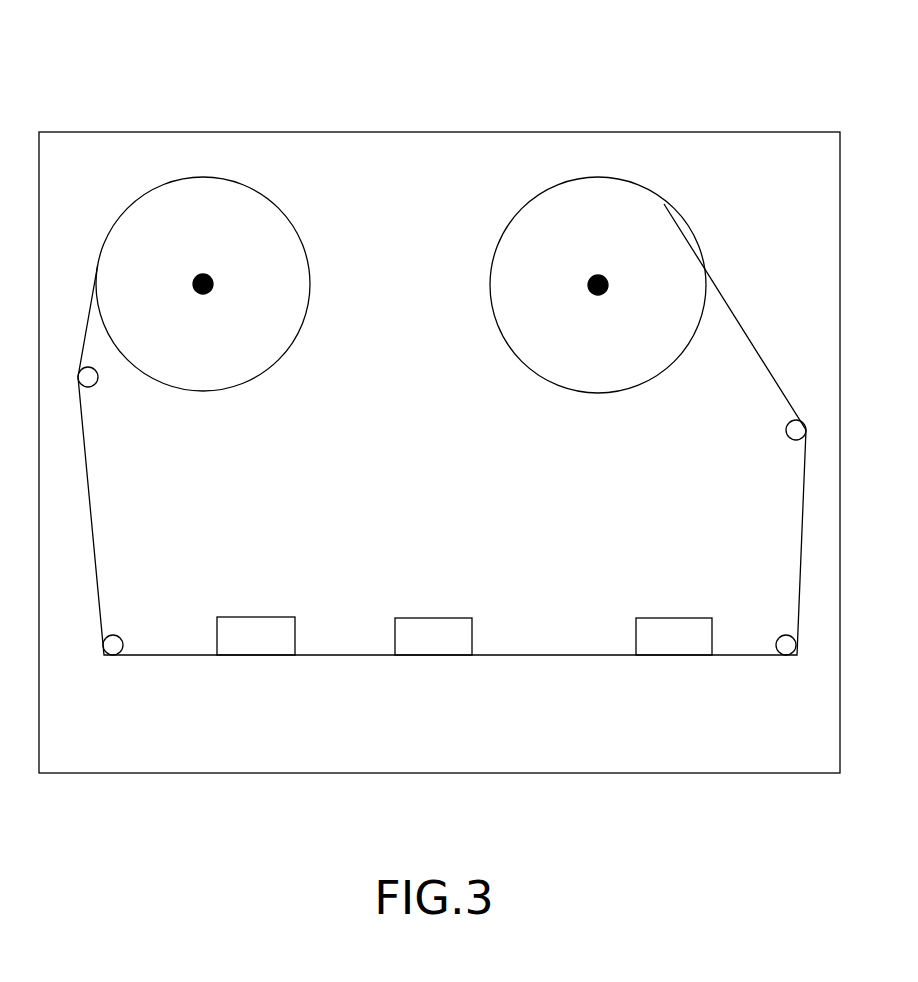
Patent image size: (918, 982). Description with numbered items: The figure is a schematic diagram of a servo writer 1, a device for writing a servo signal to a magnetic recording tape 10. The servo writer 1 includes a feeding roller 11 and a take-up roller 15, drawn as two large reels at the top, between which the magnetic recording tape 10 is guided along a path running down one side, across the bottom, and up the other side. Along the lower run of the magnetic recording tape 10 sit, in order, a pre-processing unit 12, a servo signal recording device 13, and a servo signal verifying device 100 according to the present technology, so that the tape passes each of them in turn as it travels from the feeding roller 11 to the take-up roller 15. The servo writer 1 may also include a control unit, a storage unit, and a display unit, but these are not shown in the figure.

The servo writer 1 is at (448, 102).
The magnetic recording tape 10 is at (560, 655).
The feeding roller 11 is at (208, 278).
The pre-processing unit 12 is at (257, 617).
The servo signal recording device 13 is at (430, 618).
The take-up roller 15 is at (603, 279).
The servo signal verifying device 100 is at (670, 618).